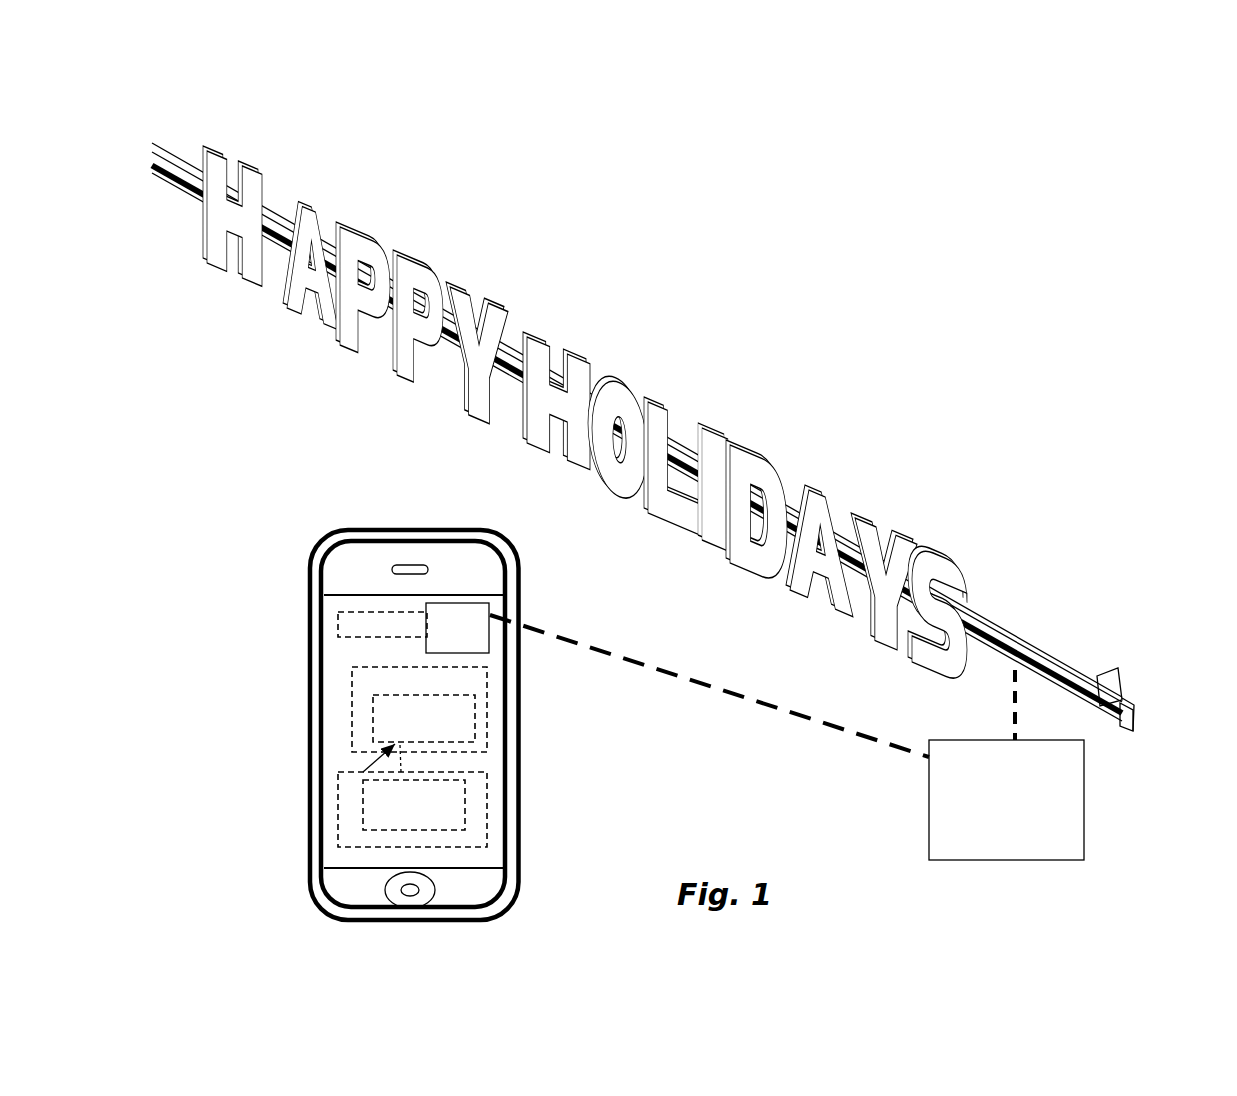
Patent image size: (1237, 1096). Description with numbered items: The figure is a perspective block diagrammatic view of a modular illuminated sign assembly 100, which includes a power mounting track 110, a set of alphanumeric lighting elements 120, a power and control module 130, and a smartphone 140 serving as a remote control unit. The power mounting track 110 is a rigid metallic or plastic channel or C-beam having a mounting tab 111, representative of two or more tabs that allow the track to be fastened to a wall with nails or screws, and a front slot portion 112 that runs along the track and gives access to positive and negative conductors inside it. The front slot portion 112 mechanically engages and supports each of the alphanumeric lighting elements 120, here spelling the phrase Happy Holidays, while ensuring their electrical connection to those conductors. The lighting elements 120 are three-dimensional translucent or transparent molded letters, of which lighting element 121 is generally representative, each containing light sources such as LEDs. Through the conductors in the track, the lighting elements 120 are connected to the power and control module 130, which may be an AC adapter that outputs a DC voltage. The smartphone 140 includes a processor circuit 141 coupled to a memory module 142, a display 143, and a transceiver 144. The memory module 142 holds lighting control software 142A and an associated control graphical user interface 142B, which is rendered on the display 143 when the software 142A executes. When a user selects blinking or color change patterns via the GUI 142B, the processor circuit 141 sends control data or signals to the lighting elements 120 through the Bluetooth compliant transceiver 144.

The illuminated sign assembly 100 is at (778, 265).
The power mounting track 110 is at (683, 437).
The mounting tab 111 is at (1108, 668).
The front slot portion 112 is at (993, 645).
The alphanumeric lighting elements 120 is at (585, 415).
The lighting element 121 is at (545, 335).
The power and control module 130 is at (928, 812).
The smartphone 140 is at (575, 699).
The processor circuit 141 is at (338, 612).
The memory module 142 is at (360, 693).
The lighting control software 142A is at (373, 722).
The control graphical user interface 142B is at (363, 808).
The display 143 is at (416, 795).
The transceiver 144 is at (484, 606).